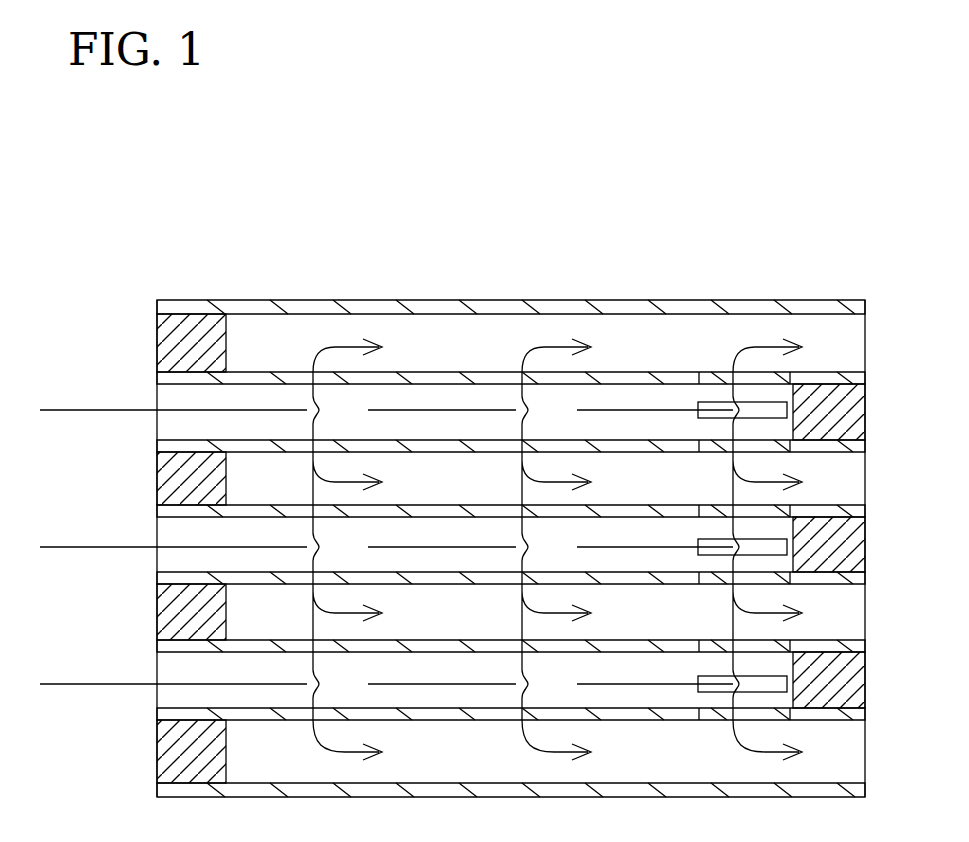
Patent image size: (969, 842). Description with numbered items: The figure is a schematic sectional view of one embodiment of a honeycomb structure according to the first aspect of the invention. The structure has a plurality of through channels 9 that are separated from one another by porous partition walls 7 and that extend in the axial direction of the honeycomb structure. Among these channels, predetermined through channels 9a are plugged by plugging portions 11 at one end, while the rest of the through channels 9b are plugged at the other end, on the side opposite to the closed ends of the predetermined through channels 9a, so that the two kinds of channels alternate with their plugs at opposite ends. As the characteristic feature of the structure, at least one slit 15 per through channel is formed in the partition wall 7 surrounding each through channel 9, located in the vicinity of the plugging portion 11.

The porous partition wall 7 is at (630, 372).
The through channel 9 is at (523, 215).
The predetermined through channel 9a is at (437, 340).
The rest of through channels 9b is at (501, 402).
The plugging portion 11 is at (158, 473).
The slit 15 is at (766, 402).